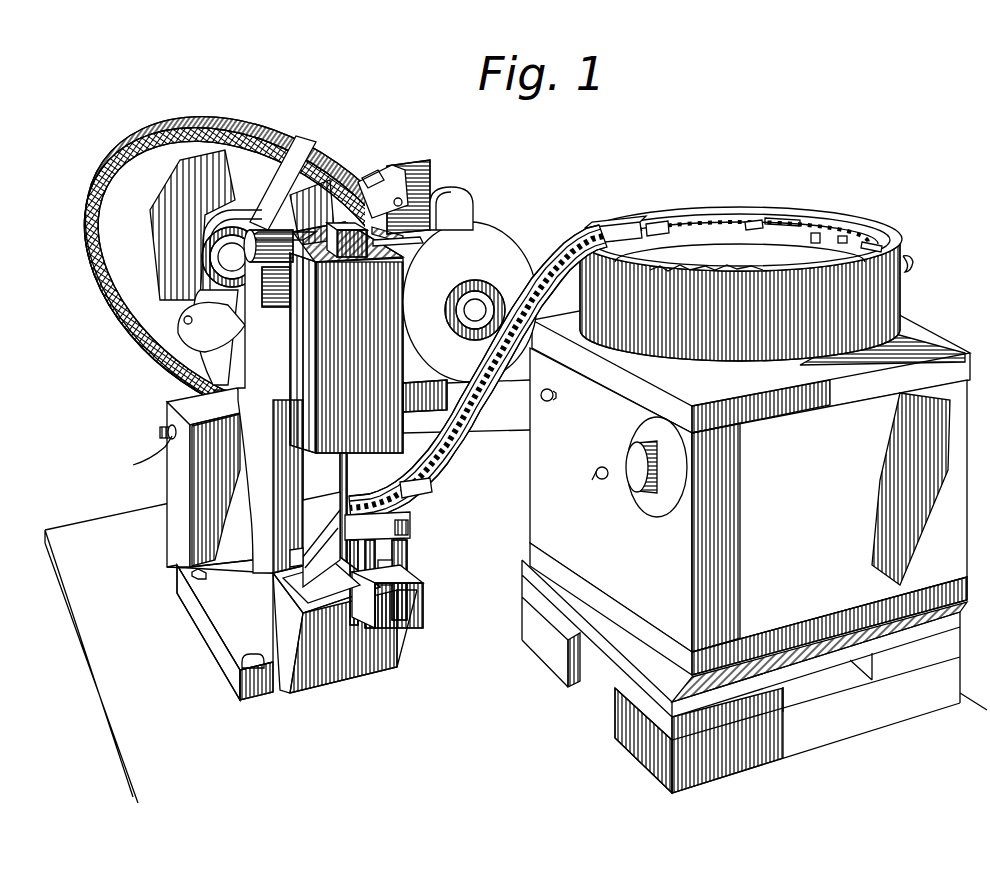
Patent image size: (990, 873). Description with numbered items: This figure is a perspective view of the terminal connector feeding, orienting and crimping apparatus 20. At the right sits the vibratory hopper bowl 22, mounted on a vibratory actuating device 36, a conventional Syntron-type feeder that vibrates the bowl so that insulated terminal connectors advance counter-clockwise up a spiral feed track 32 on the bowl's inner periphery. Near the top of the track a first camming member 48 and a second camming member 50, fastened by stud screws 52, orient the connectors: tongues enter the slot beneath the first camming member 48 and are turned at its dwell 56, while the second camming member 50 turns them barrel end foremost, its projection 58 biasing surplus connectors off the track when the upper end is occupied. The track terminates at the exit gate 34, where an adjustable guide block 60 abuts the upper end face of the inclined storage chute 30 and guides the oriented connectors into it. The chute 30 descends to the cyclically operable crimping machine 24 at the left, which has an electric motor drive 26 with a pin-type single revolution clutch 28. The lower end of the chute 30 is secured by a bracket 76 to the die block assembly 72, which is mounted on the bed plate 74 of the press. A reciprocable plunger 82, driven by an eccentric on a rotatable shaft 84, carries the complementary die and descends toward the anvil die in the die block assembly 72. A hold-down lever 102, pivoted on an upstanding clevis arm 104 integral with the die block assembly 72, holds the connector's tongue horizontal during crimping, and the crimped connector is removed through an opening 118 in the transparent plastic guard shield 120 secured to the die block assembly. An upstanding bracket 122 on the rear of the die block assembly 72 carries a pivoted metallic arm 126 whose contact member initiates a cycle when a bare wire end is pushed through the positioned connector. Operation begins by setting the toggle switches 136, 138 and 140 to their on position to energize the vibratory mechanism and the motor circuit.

The terminal connector feeding, orienting and crimping apparatus 20 is at (527, 200).
The vibratory hopper bowl 22 is at (890, 294).
The crimping machine 24 is at (260, 513).
The electric motor drive 26 is at (483, 258).
The single revolution clutch 28 is at (205, 287).
The inclined storage chute 30 is at (560, 248).
The feed track 32 is at (815, 237).
The exit gate 34 is at (603, 225).
The vibratory actuating device 36 is at (822, 511).
The first camming member 48 is at (870, 243).
The second camming member 50 is at (753, 223).
The stud screws 52 is at (907, 267).
The dwell 56 is at (843, 240).
The projection 58 is at (773, 217).
The guide block 60 is at (650, 228).
The die block assembly 72 is at (420, 603).
The bed plate 74 is at (283, 693).
The bracket 76 is at (427, 488).
The reciprocable plunger 82 is at (341, 222).
The rotatable shaft 84 is at (280, 303).
The hold-down lever 102 is at (355, 590).
The clevis arm 104 is at (392, 580).
The opening 118 is at (303, 515).
The transparent plastic guard shield 120 is at (297, 558).
The upstanding bracket 122 is at (400, 548).
The metallic arm 126 is at (400, 523).
The toggle switch 136 is at (600, 480).
The toggle switch 138 is at (160, 428).
The toggle switch 140 is at (134, 456).